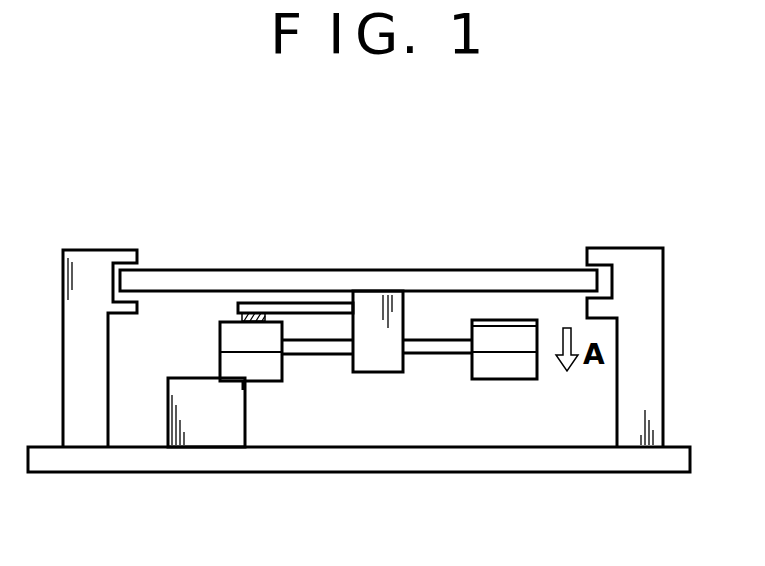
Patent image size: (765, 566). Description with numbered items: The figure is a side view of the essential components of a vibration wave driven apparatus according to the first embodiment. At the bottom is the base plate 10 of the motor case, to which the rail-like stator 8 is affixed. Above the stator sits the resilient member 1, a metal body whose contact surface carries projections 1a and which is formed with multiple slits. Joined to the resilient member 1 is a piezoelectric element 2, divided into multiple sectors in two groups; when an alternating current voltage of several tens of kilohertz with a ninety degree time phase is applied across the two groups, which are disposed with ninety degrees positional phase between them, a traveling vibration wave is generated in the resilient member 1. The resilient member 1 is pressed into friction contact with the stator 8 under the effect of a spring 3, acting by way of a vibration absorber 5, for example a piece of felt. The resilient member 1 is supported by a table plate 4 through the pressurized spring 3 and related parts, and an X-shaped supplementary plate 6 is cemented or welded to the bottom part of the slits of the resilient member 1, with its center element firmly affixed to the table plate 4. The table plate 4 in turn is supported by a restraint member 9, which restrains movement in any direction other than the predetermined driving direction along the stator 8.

The resilient member 1 is at (228, 340).
The projections 1a is at (262, 370).
The piezoelectric element 2 is at (502, 327).
The spring 3 is at (303, 305).
The table plate 4 is at (397, 283).
The vibration absorber 5 is at (233, 317).
The X-shaped supplementary plate 6 is at (437, 354).
The rail-like stator 8 is at (203, 430).
The restraint member 9 is at (655, 322).
The base plate 10 is at (635, 465).